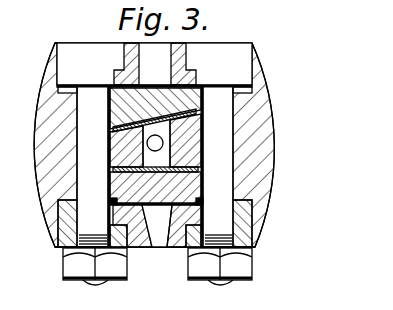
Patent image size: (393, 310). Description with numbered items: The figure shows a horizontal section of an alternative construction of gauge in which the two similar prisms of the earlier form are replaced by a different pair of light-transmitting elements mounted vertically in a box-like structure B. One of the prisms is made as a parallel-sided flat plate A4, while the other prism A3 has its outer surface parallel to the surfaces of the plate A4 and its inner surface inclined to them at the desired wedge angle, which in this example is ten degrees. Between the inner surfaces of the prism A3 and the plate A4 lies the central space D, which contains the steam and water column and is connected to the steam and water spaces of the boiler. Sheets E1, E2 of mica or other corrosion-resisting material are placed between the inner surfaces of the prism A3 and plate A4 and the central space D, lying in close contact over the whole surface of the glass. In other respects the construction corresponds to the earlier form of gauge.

The box-like structure B is at (43, 123).
The prism A3 is at (112, 86).
The sheet of mica E1 is at (197, 84).
The central space D is at (163, 162).
The parallel-sided flat plate A4 is at (152, 247).
The sheet of mica E2 is at (168, 247).